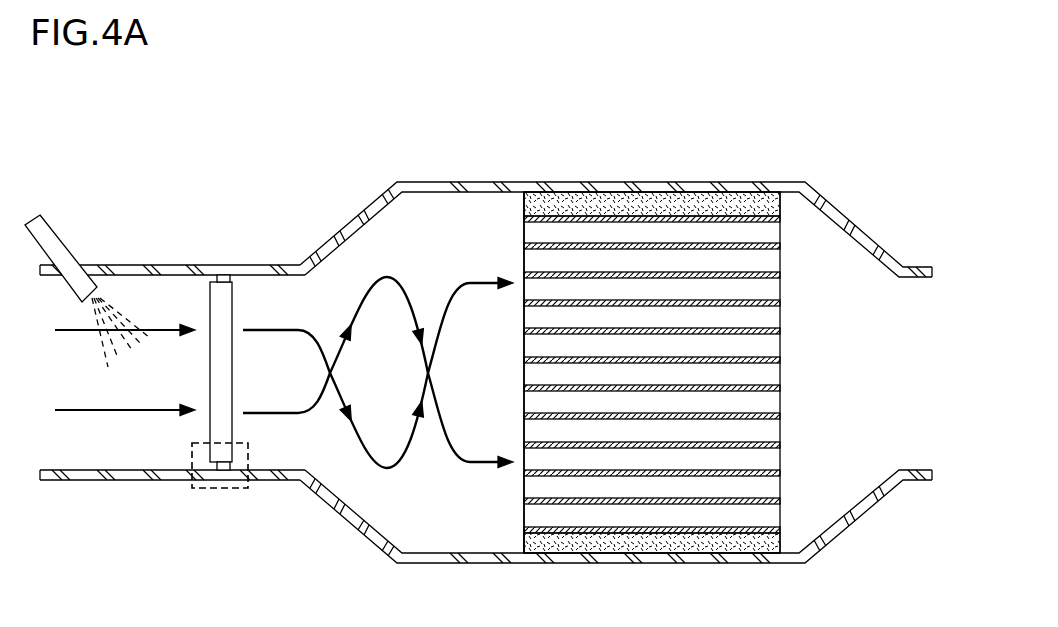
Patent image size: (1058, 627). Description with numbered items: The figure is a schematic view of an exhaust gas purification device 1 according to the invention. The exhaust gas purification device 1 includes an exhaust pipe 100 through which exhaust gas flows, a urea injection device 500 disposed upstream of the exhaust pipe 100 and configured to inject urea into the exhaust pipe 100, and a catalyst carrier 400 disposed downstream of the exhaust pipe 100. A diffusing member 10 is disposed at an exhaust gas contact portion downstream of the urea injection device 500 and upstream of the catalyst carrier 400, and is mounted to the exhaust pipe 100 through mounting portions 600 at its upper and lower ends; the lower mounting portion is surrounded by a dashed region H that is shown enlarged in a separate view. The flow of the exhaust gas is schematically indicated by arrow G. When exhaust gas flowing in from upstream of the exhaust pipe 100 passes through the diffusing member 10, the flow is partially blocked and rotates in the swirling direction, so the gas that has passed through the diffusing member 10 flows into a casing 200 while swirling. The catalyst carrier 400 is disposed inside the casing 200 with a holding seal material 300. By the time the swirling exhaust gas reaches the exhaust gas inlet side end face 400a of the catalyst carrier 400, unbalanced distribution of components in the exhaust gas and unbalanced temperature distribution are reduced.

The exhaust gas purification device 1 is at (268, 141).
The diffusing member 10 is at (217, 293).
The exhaust pipe 100 is at (135, 475).
The casing 200 is at (417, 182).
The holding seal material 300 is at (605, 200).
The catalyst carrier 400 is at (673, 228).
The exhaust gas inlet side end face 400a is at (524, 245).
The urea injection device 500 is at (50, 243).
The mounting boss 600 is at (222, 282).
The arrow G is at (270, 372).
The dashed region H is at (232, 478).